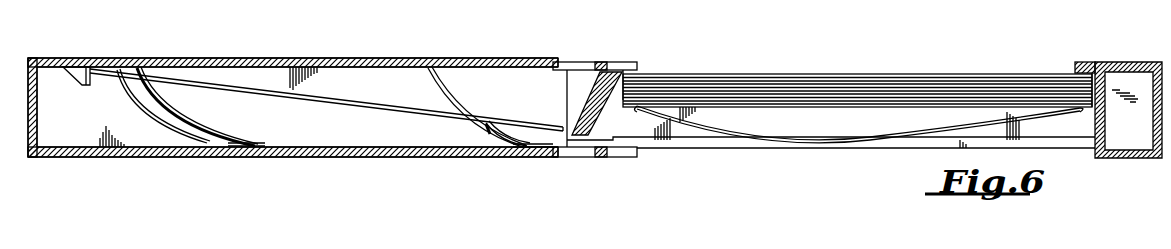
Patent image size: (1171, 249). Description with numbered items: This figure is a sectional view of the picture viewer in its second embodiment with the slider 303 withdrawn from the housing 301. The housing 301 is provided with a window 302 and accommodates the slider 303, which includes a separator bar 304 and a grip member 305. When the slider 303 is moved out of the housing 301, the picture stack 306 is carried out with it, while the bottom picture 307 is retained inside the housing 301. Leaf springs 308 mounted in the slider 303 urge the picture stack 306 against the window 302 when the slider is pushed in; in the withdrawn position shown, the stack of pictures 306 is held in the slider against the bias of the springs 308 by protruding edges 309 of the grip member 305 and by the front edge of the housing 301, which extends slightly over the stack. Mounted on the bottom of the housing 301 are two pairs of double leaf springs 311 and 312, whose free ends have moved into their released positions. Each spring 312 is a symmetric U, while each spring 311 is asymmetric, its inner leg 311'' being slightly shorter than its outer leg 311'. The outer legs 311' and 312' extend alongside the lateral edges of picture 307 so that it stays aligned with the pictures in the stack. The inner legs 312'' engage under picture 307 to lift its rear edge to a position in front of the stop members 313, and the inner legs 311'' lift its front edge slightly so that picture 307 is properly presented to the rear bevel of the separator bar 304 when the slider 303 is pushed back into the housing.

The housing 301 is at (420, 158).
The window 302 is at (334, 62).
The slider 303 is at (833, 150).
The separator bar 304 is at (585, 100).
The grip member 305 is at (1127, 62).
The picture stack 306 is at (753, 84).
The bottom picture 307 is at (213, 84).
The leaf springs 308 is at (727, 127).
The protruding edges 309 is at (1077, 70).
The double leaf spring 311 is at (533, 111).
The outer leg of spring 311 311' is at (449, 107).
The inner leg of spring 311 311'' is at (471, 131).
The double leaf spring 312 is at (257, 123).
The outer leg of spring 312 312' is at (197, 106).
The inner leg of spring 312 312'' is at (140, 106).
The stop members 313 is at (87, 64).